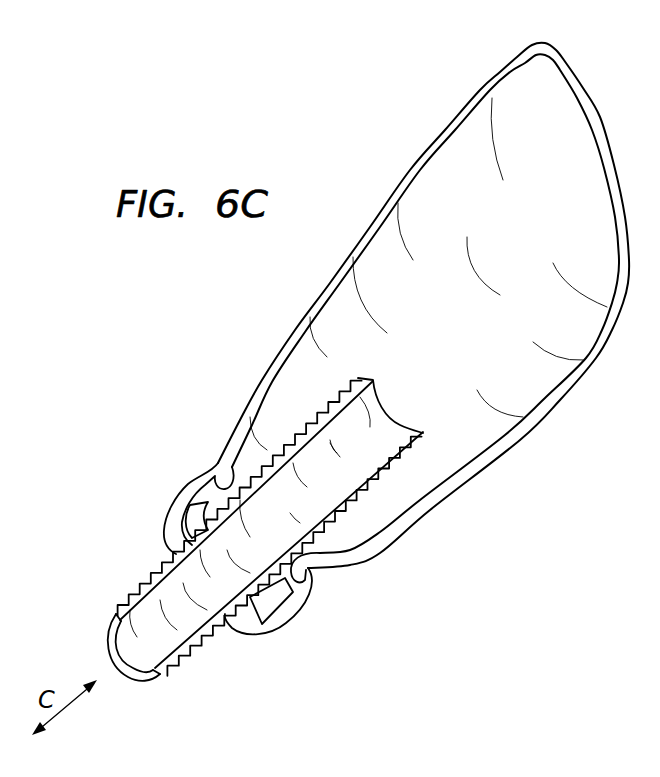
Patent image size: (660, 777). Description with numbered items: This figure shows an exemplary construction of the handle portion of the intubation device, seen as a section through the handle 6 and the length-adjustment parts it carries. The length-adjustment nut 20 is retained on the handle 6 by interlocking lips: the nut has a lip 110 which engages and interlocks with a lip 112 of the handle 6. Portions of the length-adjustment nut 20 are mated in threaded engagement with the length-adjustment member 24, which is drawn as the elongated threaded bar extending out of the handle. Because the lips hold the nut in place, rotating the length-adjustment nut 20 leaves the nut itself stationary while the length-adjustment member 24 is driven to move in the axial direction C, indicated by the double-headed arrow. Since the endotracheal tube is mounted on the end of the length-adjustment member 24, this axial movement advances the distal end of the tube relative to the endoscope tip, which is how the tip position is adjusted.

The handle 6 is at (410, 170).
The length-adjustment member 24 is at (292, 407).
The length-adjustment nut 20 is at (191, 481).
The lip 110 is at (310, 578).
The lip 112 is at (325, 550).